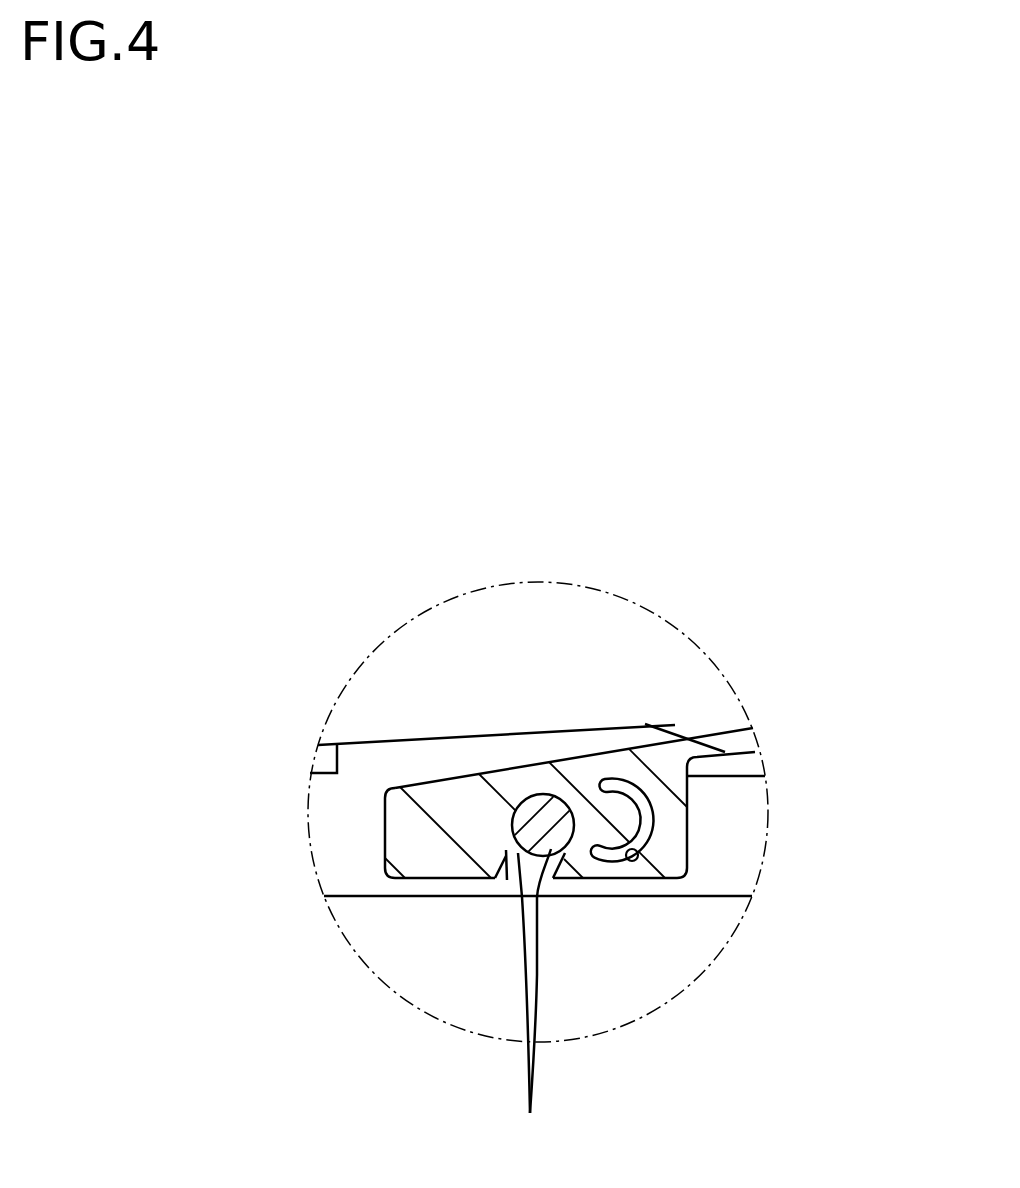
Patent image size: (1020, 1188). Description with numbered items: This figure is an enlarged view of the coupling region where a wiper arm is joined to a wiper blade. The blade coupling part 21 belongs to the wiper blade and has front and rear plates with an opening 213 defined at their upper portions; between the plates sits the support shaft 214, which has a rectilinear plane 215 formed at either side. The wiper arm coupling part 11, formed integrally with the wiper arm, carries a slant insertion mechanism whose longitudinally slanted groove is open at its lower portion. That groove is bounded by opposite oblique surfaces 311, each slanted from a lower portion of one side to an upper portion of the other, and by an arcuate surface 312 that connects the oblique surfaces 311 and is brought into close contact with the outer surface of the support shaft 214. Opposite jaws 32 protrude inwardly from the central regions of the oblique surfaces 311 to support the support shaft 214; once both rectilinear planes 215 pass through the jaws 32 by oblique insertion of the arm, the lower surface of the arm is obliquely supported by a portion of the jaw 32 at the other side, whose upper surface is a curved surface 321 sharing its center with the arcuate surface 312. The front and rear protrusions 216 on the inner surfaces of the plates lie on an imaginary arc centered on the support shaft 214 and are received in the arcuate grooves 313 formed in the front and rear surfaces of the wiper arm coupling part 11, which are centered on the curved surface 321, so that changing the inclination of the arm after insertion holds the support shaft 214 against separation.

The wiper arm coupling part 11 is at (688, 838).
The blade coupling part 21 is at (817, 580).
The opening 213 is at (507, 766).
The support shaft 214 is at (535, 812).
The rectilinear plane 215 is at (560, 802).
The front and rear protrusions 216 is at (632, 861).
The oblique surface 311 is at (499, 850).
The arcuate surface 312 is at (517, 810).
The arcuate grooves 313 is at (645, 838).
The jaws 32 is at (540, 981).
The curved surface 321 is at (515, 818).